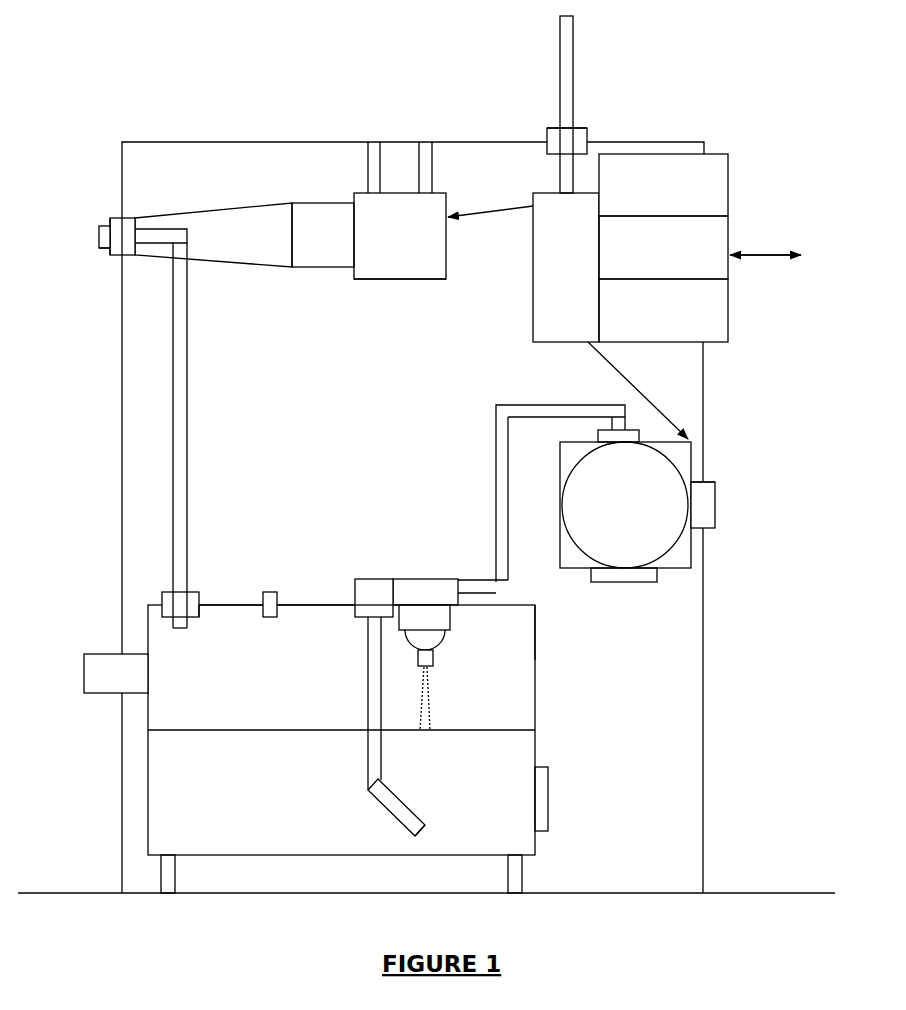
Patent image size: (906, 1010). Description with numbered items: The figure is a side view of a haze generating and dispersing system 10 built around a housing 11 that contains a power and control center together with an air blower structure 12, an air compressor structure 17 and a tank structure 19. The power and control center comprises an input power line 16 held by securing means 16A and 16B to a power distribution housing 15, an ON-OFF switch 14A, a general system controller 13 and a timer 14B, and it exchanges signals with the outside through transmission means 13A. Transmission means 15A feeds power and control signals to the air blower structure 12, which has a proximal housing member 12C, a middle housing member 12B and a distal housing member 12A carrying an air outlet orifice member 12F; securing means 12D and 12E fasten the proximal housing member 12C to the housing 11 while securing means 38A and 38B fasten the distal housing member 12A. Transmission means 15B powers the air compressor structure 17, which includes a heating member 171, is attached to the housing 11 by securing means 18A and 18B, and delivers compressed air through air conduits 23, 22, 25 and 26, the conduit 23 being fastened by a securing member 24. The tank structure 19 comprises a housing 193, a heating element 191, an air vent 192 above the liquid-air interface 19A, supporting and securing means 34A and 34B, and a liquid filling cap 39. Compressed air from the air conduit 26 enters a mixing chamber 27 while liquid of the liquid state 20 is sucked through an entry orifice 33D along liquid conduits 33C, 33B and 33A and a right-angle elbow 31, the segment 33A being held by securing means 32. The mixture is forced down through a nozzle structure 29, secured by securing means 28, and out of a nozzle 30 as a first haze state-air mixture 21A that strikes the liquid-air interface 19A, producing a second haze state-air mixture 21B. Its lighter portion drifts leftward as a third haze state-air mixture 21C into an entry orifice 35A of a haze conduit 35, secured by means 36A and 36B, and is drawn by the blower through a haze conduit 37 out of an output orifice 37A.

The haze system 10 is at (426, 935).
The housing 11 is at (706, 740).
The air blower structure 12 is at (400, 236).
The distal housing member 12A is at (213, 235).
The middle housing member 12B is at (323, 235).
The proximal housing member 12C is at (400, 261).
The securing means 12D is at (366, 183).
The securing means 12E is at (434, 171).
The air outlet orifice member 12F is at (97, 250).
The general system controller 13 is at (663, 247).
The transmission means 13A is at (766, 241).
The ON-OFF switch 14A is at (663, 185).
The timer 14B is at (663, 310).
The power distribution housing 15 is at (566, 267).
The transmission means 15A is at (490, 204).
The transmission means 15B is at (609, 372).
The input power line 16 is at (598, 58).
The securing means 16A is at (584, 126).
The securing means 16B is at (553, 148).
The air compressor structure 17 is at (625, 505).
The heating member 171 is at (624, 586).
The securing means 18A is at (719, 504).
The securing means 18B is at (704, 480).
The tank structure 19 is at (537, 679).
The liquid-air interface 19A is at (341, 740).
The heating element 191 is at (556, 799).
The air vent 192 is at (116, 673).
The housing 193 is at (550, 632).
The liquid state 20 is at (216, 794).
The first haze state-air mixture 21A is at (438, 698).
The second haze state-air mixture 21B is at (238, 685).
The third haze state-air mixture 21C is at (231, 626).
The air conduit 22 is at (548, 403).
The air conduit 23 is at (629, 421).
The securing member 24 is at (596, 434).
The air conduit 25 is at (492, 499).
The air conduit 26 is at (480, 578).
The mixing chamber 27 is at (426, 578).
The securing means 28 is at (434, 619).
The nozzle structure 29 is at (434, 641).
The nozzle 30 is at (436, 660).
The right-angle elbow 31 is at (364, 593).
The securing means 32 is at (352, 620).
The liquid line segment 33A is at (358, 673).
The liquid line segment 33B is at (358, 760).
The liquid conduit 33C is at (394, 807).
The entry orifice 33D is at (424, 838).
The supporting and securing means 34A is at (506, 884).
The supporting and securing means 34B is at (177, 884).
The haze conduit 35 is at (188, 424).
The entry orifice 35A is at (184, 638).
The securing means 36A is at (196, 607).
The securing means 36B is at (203, 619).
The haze conduit 37 is at (156, 228).
The output orifice 37A is at (97, 233).
The securing means 38A is at (132, 214).
The securing means 38B is at (108, 216).
The liquid filling cap 39 is at (280, 603).